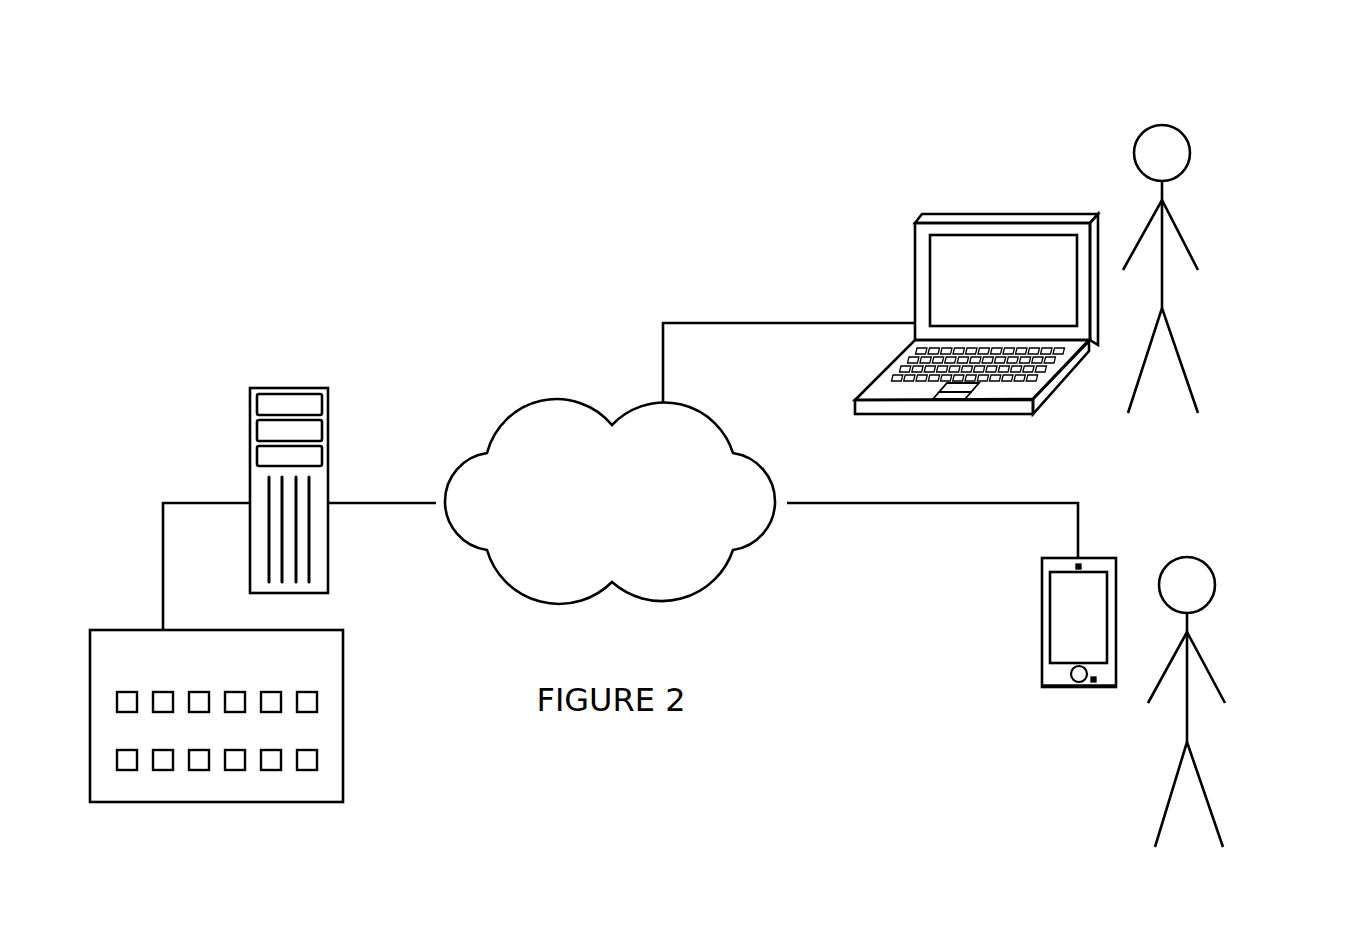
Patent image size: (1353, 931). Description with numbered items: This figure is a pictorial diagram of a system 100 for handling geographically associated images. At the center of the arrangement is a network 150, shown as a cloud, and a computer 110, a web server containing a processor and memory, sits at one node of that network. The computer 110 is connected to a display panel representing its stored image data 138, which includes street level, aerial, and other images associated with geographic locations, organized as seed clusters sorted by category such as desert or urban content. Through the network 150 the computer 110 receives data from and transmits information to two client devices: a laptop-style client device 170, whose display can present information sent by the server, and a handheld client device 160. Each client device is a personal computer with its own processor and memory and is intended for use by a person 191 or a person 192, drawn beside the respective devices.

The system 100 is at (296, 80).
The computer 110 is at (250, 403).
The image data 138 is at (343, 712).
The network 150 is at (560, 402).
The client device 160 is at (1042, 580).
The client device 170 is at (915, 254).
The person 191 is at (1188, 212).
The person 192 is at (1215, 630).